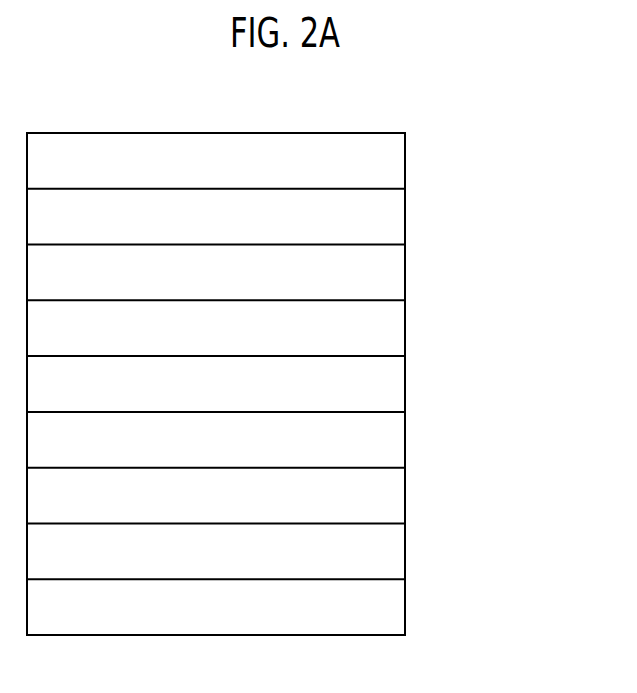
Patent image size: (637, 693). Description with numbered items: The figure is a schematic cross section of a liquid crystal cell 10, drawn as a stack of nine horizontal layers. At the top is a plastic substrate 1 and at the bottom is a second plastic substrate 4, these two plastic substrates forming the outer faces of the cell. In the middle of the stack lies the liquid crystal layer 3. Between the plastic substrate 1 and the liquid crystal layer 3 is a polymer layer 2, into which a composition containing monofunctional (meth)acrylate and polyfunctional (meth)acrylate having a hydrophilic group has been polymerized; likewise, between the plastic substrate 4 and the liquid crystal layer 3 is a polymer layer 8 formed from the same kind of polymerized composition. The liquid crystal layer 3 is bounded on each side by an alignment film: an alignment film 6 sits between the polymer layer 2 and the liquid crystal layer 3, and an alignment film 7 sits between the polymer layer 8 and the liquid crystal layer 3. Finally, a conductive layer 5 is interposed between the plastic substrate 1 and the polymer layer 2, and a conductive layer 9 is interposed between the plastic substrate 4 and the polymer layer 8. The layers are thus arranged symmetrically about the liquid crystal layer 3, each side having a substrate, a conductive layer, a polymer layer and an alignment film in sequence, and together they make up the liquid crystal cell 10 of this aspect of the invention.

The liquid crystal cell 10 is at (366, 109).
The plastic substrate 1 is at (378, 162).
The conductive layer 5 is at (378, 218).
The polymer layer 2 is at (378, 274).
The alignment film 6 is at (378, 329).
The liquid crystal layer 3 is at (378, 385).
The alignment film 7 is at (378, 441).
The polymer layer 8 is at (378, 497).
The conductive layer 9 is at (378, 552).
The plastic substrate 4 is at (378, 608).